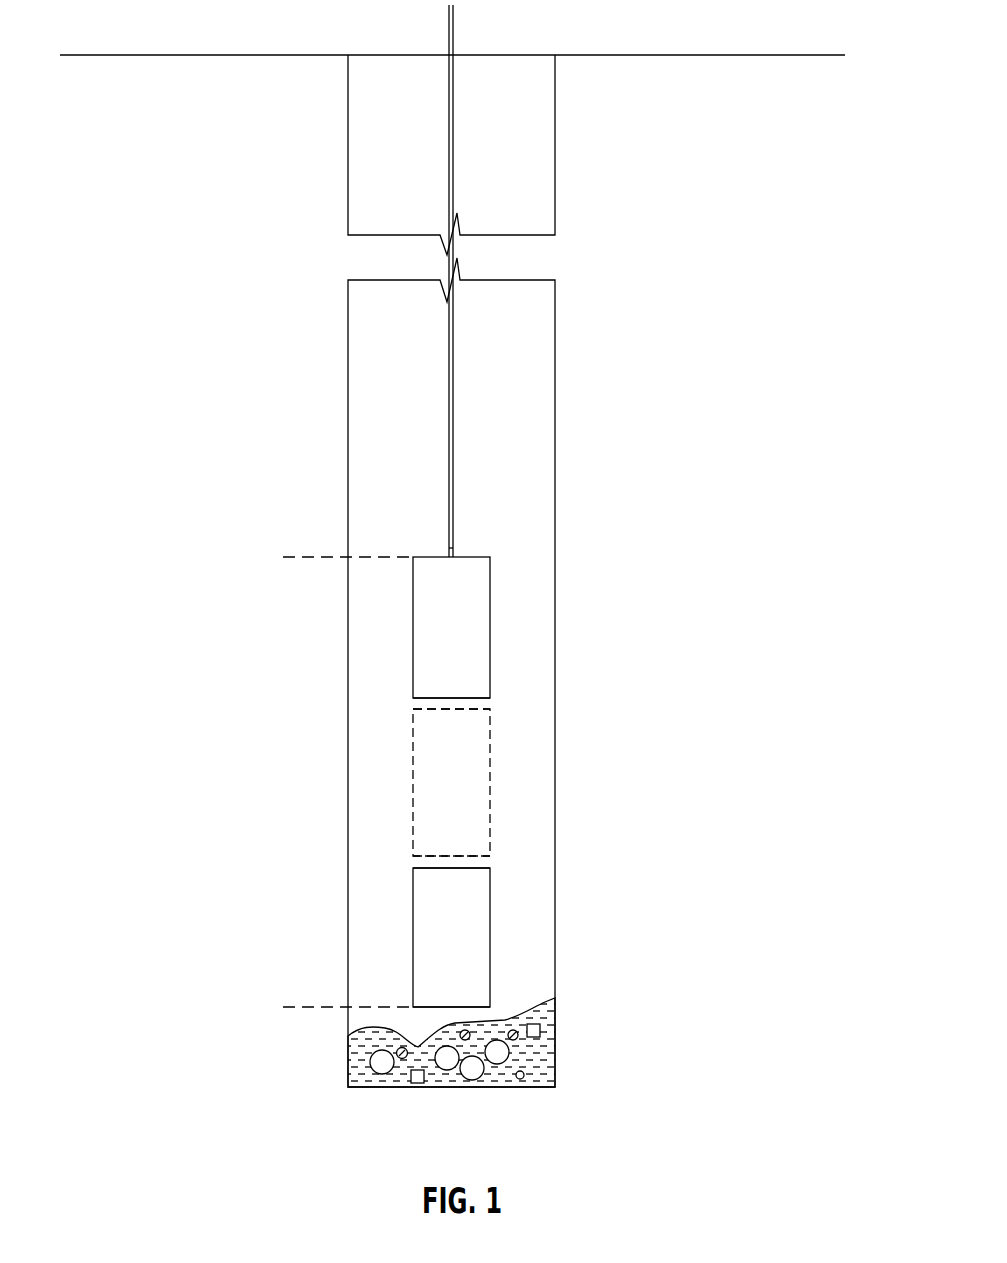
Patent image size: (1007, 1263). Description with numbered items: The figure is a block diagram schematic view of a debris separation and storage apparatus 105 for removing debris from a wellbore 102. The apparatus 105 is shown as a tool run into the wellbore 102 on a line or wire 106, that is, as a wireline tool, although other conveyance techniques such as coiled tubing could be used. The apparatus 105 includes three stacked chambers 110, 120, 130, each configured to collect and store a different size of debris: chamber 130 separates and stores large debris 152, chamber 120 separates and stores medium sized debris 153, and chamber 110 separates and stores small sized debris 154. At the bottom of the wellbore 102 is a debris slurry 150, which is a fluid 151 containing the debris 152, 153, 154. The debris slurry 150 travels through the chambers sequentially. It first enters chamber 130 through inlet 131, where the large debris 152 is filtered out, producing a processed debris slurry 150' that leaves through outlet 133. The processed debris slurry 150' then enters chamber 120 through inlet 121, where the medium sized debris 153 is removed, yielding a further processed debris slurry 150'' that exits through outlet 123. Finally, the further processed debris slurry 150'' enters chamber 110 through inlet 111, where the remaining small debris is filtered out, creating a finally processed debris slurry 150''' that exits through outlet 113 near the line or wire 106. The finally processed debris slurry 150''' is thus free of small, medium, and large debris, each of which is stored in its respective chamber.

The wellbore 102 is at (347, 173).
The debris separation and storage apparatus 105 is at (283, 557).
The line or wire 106 is at (453, 32).
The chamber 110 is at (473, 609).
The inlet 111 is at (463, 698).
The outlet 113 is at (467, 557).
The chamber 120 is at (473, 773).
The inlet 121 is at (463, 856).
The outlet 123 is at (463, 709).
The chamber 130 is at (473, 932).
The inlet 131 is at (463, 1007).
The outlet 133 is at (463, 868).
The debris slurry 150 is at (483, 1023).
The processed debris slurry 150' is at (451, 961).
The further processed debris slurry 150'' is at (450, 806).
The finally processed debris slurry 150''' is at (451, 646).
The fluid 151 is at (528, 1050).
The large debris 152 is at (496, 1064).
The medium sized debris 153 is at (421, 1084).
The small sized debris 154 is at (404, 1058).